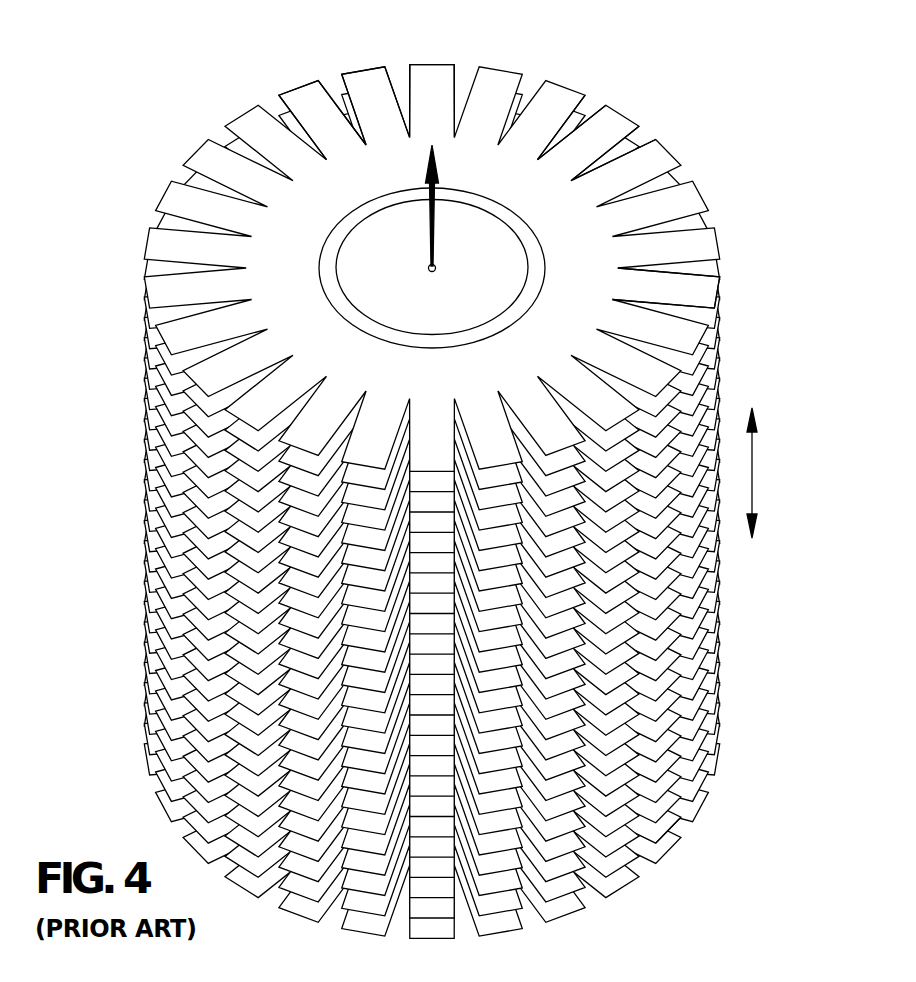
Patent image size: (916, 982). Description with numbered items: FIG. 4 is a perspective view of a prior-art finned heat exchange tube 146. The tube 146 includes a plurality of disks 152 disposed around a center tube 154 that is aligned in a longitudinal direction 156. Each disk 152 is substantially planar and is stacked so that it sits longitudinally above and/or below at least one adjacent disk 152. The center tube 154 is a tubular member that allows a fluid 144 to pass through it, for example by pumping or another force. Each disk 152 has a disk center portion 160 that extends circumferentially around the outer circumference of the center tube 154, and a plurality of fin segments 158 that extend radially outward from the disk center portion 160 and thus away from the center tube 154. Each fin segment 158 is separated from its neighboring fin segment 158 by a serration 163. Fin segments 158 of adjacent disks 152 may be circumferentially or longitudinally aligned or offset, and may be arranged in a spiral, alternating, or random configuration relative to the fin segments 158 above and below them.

The fluid 144 is at (437, 220).
The tube 146 is at (525, 479).
The disk 152 is at (618, 287).
The center tube 154 is at (527, 245).
The longitudinal direction 156 is at (752, 470).
The fin segment 158 is at (440, 73).
The disk center portion 160 is at (533, 197).
The serration 163 is at (643, 137).